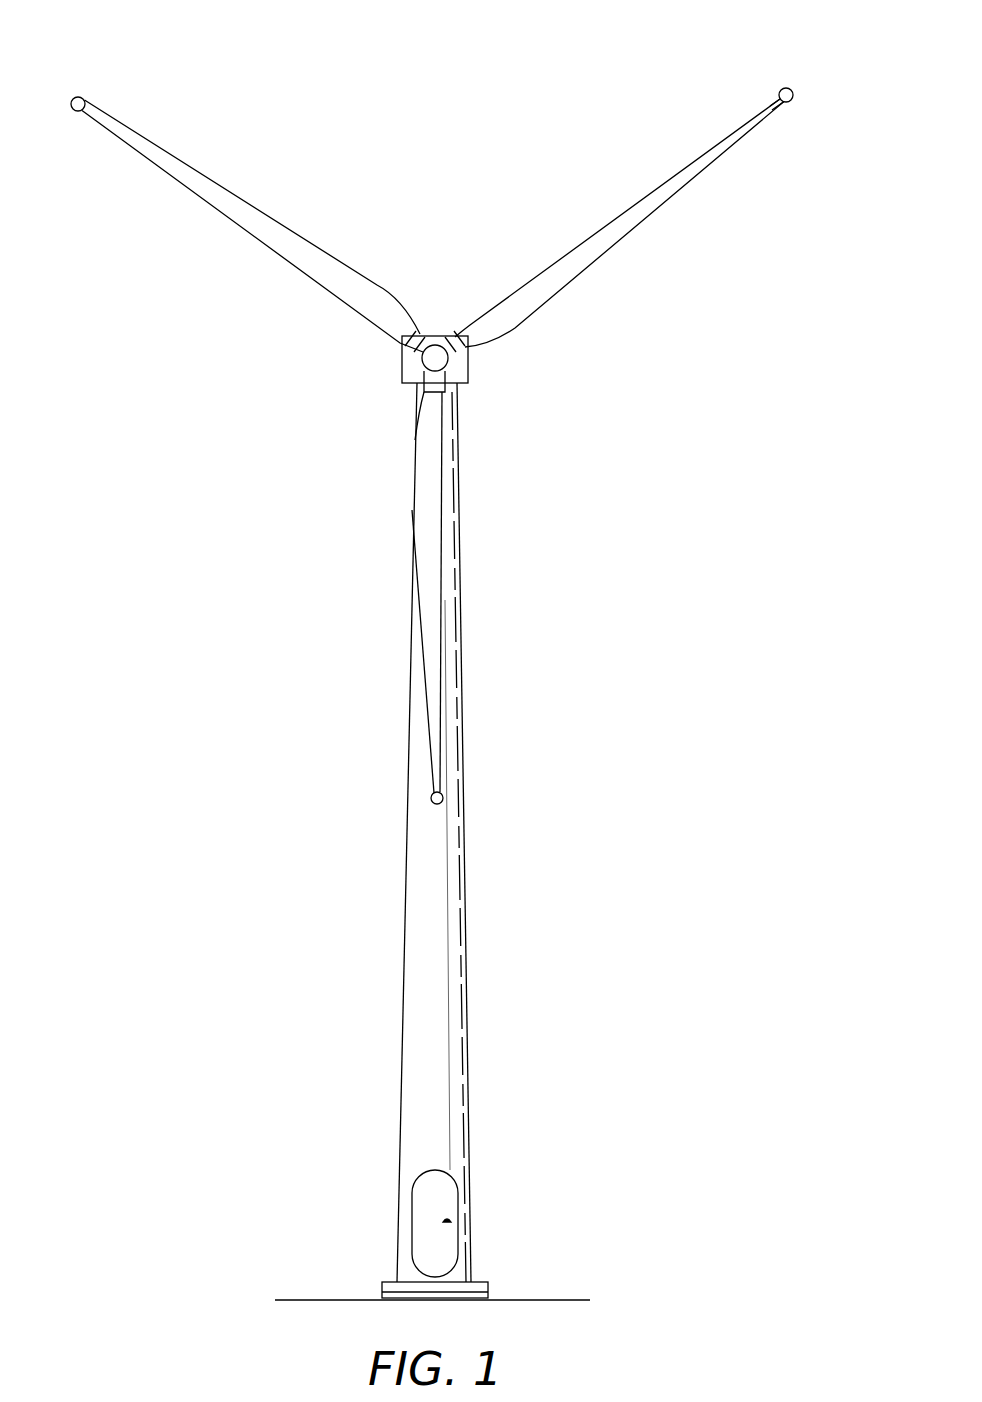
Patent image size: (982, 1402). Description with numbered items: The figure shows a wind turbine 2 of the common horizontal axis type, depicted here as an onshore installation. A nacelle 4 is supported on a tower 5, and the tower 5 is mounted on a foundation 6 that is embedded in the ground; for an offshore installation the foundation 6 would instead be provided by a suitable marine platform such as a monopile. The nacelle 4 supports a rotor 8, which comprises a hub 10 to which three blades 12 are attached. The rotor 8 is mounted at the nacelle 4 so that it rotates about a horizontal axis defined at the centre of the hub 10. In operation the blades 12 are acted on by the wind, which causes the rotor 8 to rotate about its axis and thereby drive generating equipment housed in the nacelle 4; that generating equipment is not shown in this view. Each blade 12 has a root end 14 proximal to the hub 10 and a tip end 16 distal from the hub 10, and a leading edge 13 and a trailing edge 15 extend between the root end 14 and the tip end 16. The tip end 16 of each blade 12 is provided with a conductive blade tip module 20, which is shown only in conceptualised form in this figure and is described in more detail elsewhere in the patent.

The wind turbine 2 is at (225, 71).
The nacelle 4 is at (402, 371).
The tower 5 is at (460, 1073).
The foundation 6 is at (565, 1300).
The rotor 8 is at (494, 388).
The hub 10 is at (437, 350).
The blade 12 is at (269, 244).
The leading edge 13 is at (687, 185).
The root end 14 is at (400, 338).
The trailing edge 15 is at (632, 203).
The tip end 16 is at (780, 106).
The conductive blade tip module 20 is at (781, 88).